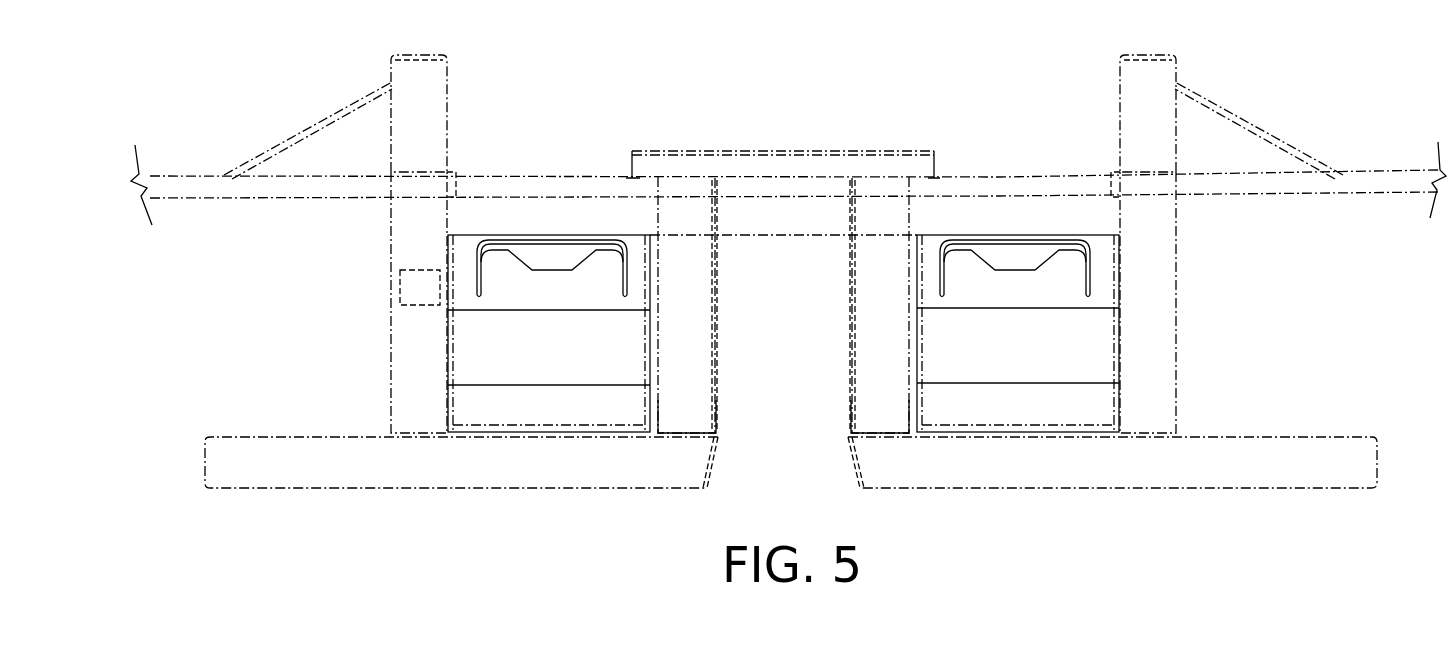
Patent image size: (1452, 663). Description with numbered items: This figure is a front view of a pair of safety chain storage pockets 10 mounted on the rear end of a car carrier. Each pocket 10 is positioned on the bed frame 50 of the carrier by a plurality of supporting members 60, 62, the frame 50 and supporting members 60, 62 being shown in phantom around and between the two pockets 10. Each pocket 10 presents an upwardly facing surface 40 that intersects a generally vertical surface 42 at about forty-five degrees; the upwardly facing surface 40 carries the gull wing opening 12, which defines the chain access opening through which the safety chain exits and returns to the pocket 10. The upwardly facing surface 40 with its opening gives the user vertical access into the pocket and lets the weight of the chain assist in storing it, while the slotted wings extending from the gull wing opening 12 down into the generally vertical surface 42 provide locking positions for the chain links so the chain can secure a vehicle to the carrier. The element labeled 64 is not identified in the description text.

The safety chain storage pocket 10 is at (498, 360).
The gull wing opening 12 is at (547, 260).
The upwardly facing surface 40 is at (597, 302).
The generally vertical surface 42 is at (597, 366).
The frame 50 is at (435, 110).
The supporting member 60 is at (508, 198).
The supporting member 62 is at (410, 333).
The base plate 64 is at (633, 470).